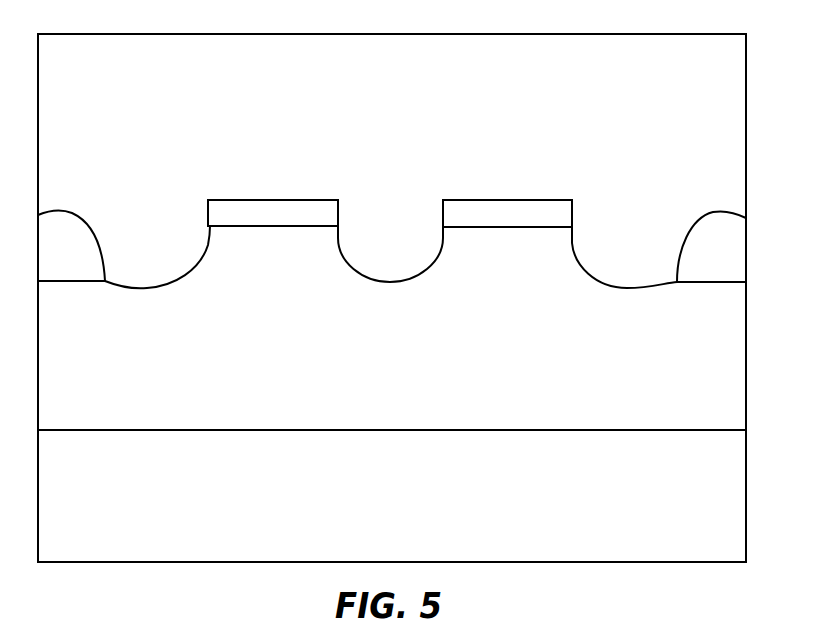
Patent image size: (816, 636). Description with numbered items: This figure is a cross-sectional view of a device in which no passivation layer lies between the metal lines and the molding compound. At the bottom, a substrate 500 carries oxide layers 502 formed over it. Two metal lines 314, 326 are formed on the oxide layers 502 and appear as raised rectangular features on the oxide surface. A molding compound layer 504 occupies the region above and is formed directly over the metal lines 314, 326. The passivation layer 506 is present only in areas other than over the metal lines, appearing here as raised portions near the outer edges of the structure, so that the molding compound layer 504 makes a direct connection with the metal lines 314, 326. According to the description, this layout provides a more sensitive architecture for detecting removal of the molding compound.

The substrate 500 is at (605, 480).
The oxide layers 502 is at (605, 408).
The molding compound layer 504 is at (605, 150).
The passivation layer 506 is at (62, 211).
The metal line 314 is at (298, 200).
The metal line 326 is at (490, 200).